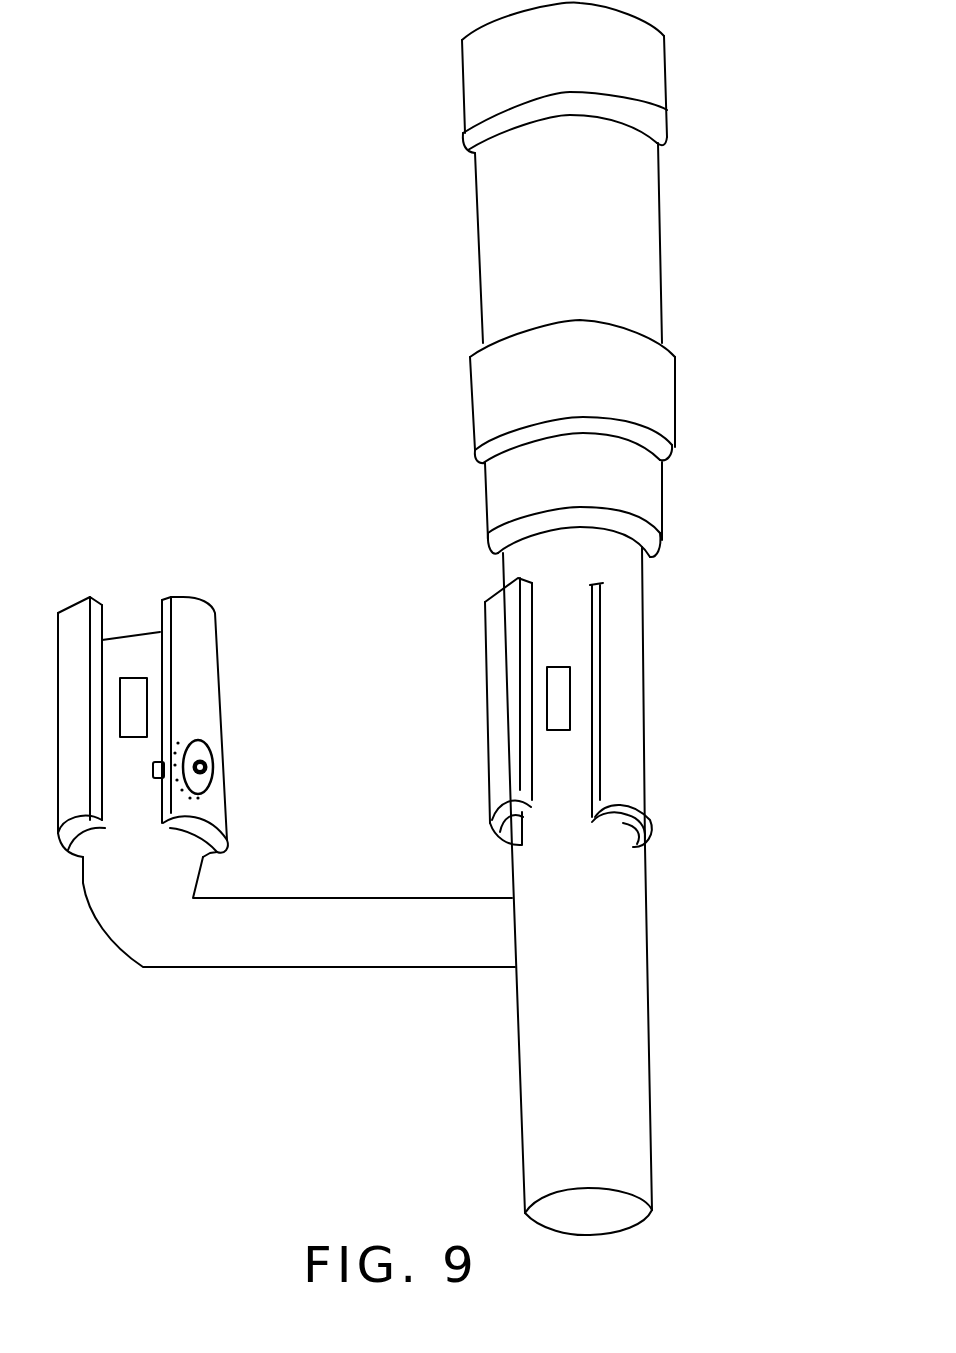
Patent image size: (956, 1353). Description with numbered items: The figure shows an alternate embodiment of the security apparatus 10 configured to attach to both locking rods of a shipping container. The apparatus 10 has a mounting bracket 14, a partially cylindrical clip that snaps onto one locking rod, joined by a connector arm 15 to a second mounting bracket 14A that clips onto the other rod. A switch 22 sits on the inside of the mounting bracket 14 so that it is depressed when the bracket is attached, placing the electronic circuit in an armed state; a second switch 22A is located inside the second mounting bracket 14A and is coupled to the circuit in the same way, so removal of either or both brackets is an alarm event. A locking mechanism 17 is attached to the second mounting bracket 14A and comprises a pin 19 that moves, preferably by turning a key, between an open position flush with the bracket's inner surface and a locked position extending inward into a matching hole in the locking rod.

The security apparatus 10 is at (410, 165).
The mounting bracket 14 is at (627, 598).
The second mounting bracket 14A is at (210, 643).
The connector arm 15 is at (313, 968).
The locking mechanism 17 is at (237, 762).
The pin 19 is at (157, 780).
The switch 22 is at (570, 693).
The second switch 22A is at (132, 715).